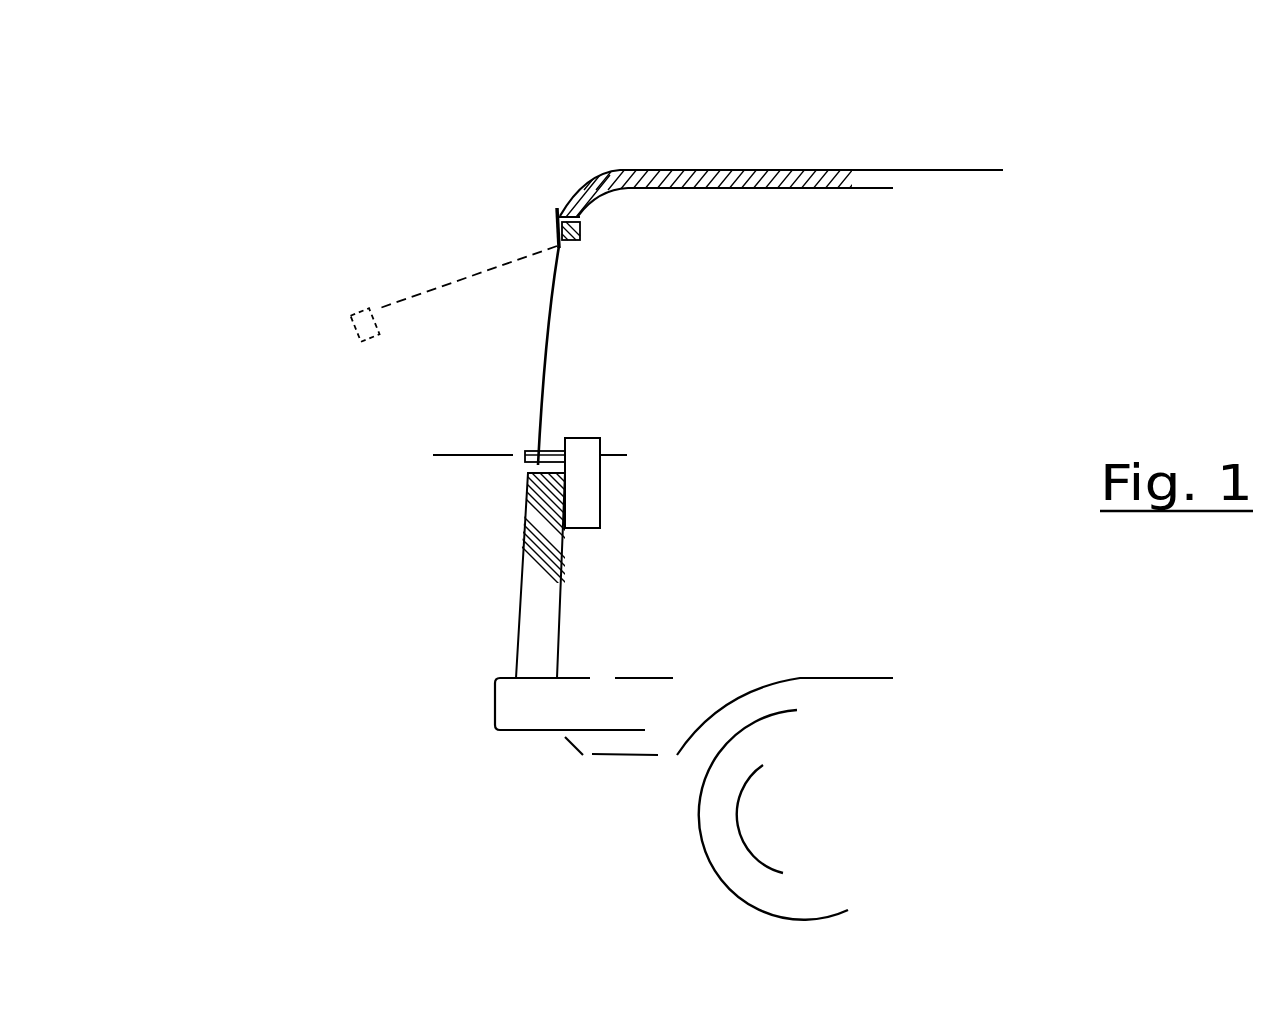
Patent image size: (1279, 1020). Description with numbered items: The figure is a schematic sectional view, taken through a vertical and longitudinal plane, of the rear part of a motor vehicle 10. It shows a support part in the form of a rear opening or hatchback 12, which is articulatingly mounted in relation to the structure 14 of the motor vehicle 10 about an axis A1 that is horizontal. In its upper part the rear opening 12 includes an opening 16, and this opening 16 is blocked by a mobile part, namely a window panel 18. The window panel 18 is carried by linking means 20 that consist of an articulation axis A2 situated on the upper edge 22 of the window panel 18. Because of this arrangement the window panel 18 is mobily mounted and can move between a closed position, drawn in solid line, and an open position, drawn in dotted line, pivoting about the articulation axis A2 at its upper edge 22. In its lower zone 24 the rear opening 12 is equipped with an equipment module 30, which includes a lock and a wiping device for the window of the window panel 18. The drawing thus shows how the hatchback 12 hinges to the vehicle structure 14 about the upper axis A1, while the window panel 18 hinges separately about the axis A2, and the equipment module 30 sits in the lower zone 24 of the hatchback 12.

The motor vehicle 10 is at (862, 130).
The rear opening or hatchback 12 is at (252, 467).
The structure 14 is at (637, 700).
The opening 16 is at (578, 246).
The window panel 18 is at (555, 313).
The linking means 20 is at (575, 261).
The upper edge 22 is at (548, 258).
The lower zone 24 is at (482, 493).
The equipment module 30 is at (585, 497).
The axis A1 is at (558, 217).
The articulation axis A2 is at (558, 245).